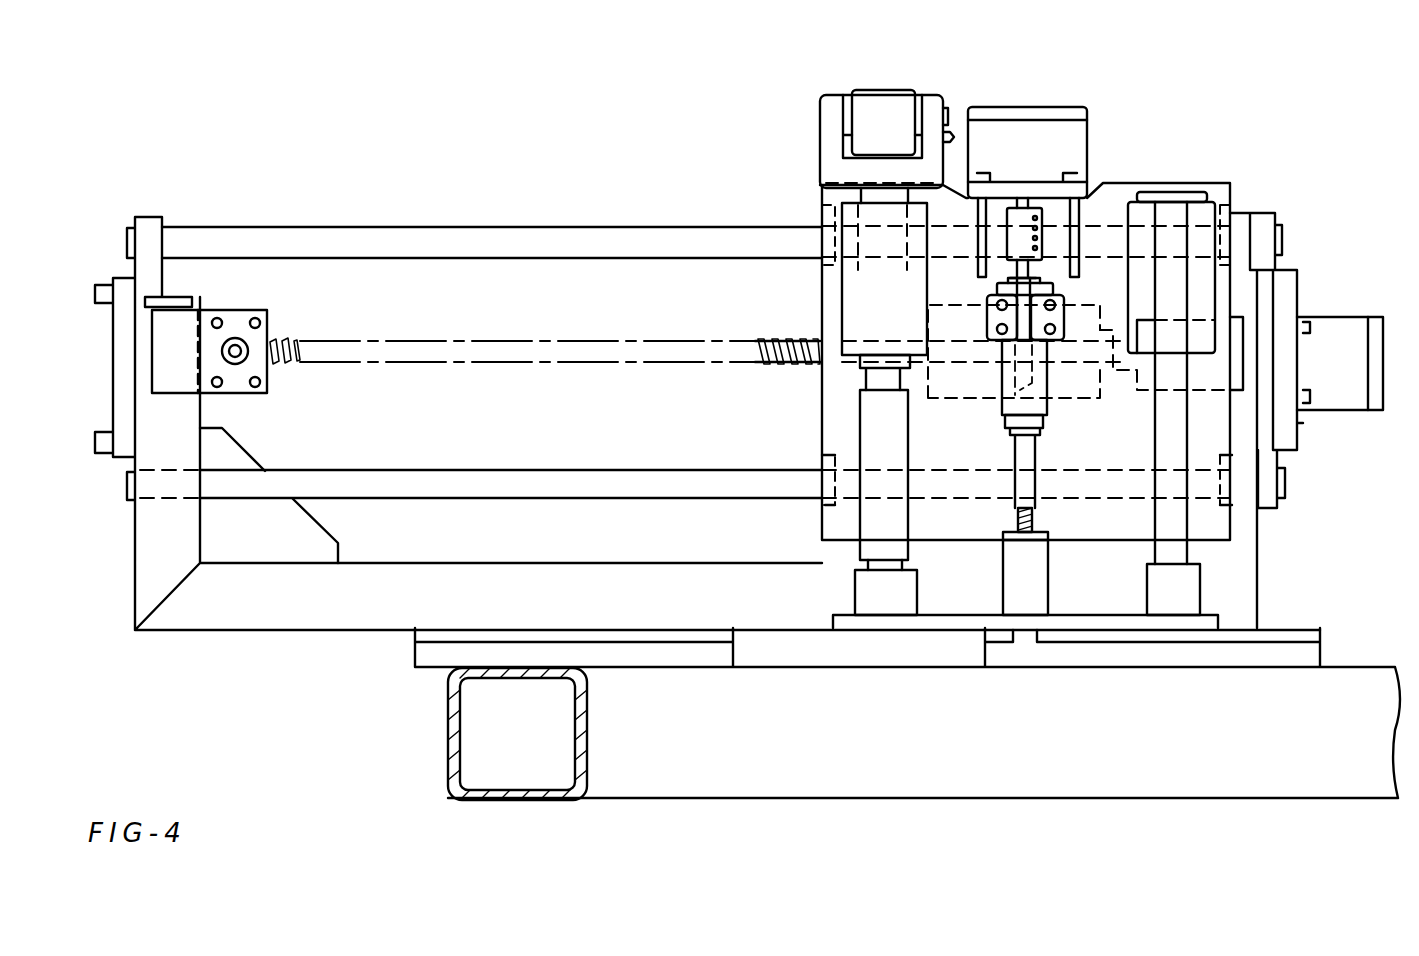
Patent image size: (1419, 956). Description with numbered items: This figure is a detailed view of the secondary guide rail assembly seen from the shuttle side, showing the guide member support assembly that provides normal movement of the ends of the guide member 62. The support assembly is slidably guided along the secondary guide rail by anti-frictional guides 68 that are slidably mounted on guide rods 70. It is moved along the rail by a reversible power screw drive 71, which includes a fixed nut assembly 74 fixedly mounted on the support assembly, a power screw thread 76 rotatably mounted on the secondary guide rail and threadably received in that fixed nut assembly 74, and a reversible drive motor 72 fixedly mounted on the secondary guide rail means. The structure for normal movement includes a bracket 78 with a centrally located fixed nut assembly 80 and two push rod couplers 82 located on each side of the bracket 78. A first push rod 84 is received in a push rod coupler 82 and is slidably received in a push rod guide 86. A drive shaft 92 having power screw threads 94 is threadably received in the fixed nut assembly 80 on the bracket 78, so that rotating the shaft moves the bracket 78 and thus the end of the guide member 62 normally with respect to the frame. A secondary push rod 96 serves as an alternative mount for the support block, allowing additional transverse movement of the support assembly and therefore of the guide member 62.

The guide member 62 is at (875, 127).
The anti-frictional guides 68 is at (830, 213).
The guide rods 70 is at (250, 240).
The reversible power screw drive 71 is at (1303, 422).
The reversible drive motor 72 is at (1327, 332).
The fixed nut assembly 74 is at (1077, 367).
The power screw thread 76 is at (767, 370).
The bracket 78 is at (1218, 617).
The fixed nut assembly 80 is at (1050, 597).
The push rod couplers 82 is at (878, 605).
The first push rod 84 is at (842, 305).
The push rod guide 86 is at (843, 205).
The drive shaft 92 is at (1020, 482).
The power screw threads 94 is at (1035, 524).
The secondary push rod 96 is at (1167, 443).